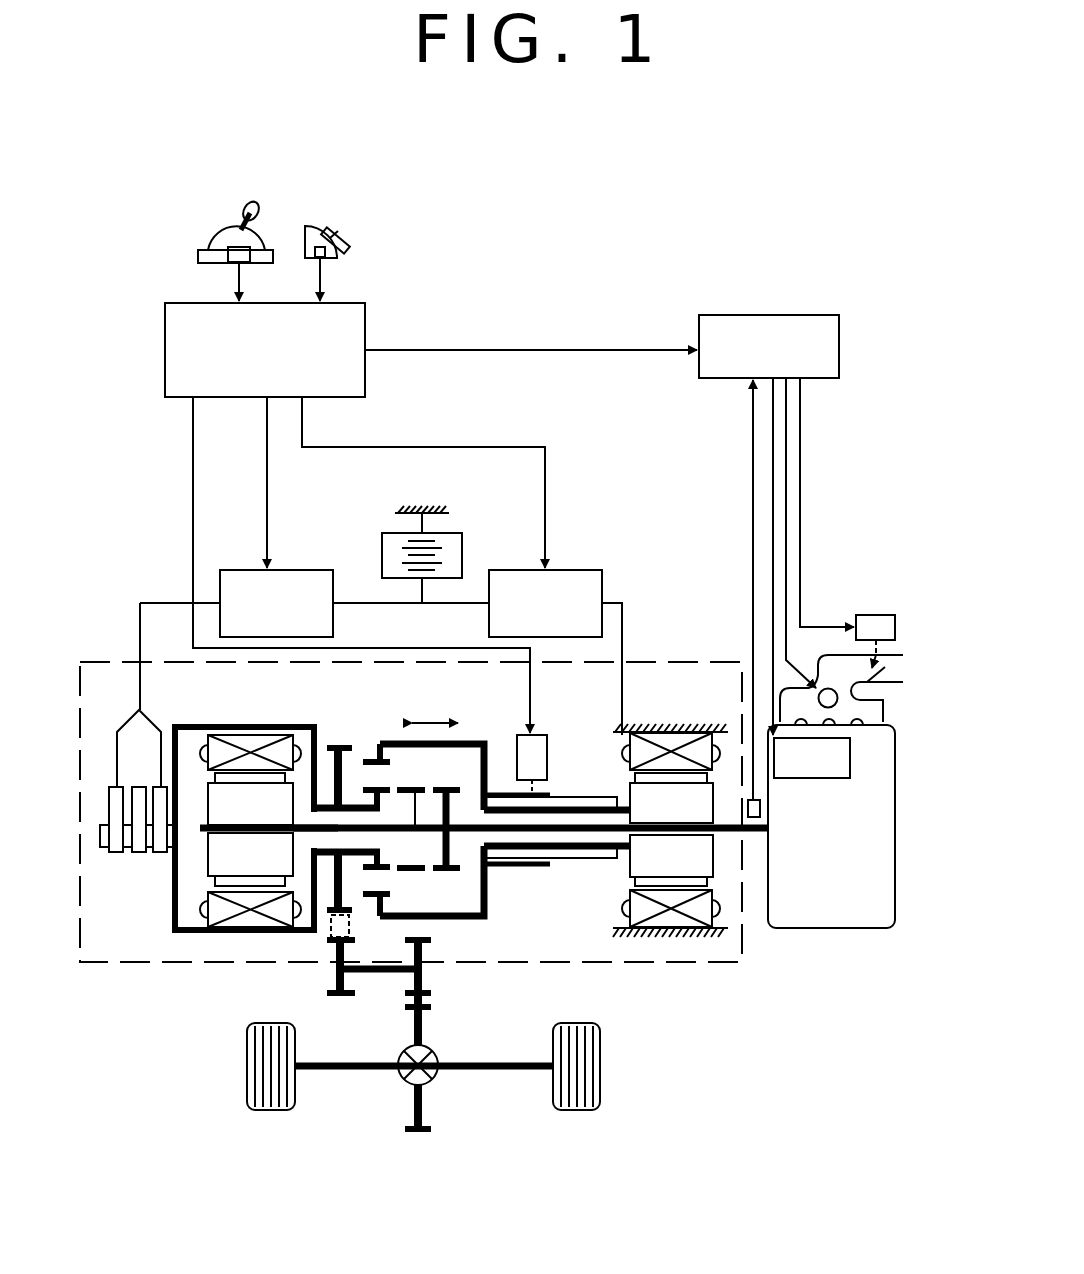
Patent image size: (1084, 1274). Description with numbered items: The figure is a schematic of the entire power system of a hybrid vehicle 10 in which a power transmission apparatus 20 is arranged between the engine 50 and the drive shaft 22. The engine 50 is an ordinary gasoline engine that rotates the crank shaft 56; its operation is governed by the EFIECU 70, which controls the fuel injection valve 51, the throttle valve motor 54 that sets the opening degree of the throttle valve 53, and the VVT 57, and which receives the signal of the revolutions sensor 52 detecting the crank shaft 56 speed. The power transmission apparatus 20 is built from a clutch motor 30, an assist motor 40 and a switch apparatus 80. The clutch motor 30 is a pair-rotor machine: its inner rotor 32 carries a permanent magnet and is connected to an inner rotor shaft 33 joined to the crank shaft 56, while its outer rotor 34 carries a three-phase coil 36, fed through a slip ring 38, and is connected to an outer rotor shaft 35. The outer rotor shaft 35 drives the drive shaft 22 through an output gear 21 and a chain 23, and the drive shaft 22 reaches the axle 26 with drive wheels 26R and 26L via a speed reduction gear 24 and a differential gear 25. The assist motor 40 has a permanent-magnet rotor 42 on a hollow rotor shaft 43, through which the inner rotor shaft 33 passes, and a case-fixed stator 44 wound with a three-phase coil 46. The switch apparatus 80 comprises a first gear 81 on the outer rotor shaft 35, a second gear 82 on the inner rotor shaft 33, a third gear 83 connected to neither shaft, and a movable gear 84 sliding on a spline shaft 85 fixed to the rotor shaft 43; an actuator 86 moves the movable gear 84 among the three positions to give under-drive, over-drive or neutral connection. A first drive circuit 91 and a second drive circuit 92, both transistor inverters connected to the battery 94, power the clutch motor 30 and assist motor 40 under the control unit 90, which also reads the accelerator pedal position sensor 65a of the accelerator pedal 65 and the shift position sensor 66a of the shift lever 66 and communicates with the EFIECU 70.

The power output apparatus 10 is at (559, 284).
The power transmission apparatus 20 is at (637, 662).
The output gear 21 is at (337, 743).
The drive shaft 22 is at (372, 974).
The chain 23 is at (331, 937).
The speed reduction gear 24 is at (431, 973).
The differential gear 25 is at (436, 1058).
The axle 26 is at (500, 1070).
The drive wheel 26L is at (262, 1023).
The drive wheel 26R is at (588, 1022).
The clutch motor 30 is at (247, 720).
The inner rotor 32 is at (213, 873).
The inner rotor shaft 33 is at (306, 836).
The outer rotor 34 is at (223, 733).
The outer rotor shaft 35 is at (183, 727).
The three-phase coil 36 is at (203, 905).
The slip ring 38 is at (103, 850).
The assist motor 40 is at (668, 686).
The rotor 42 is at (630, 865).
The hollow rotor shaft 43 is at (628, 787).
The stator 44 is at (630, 917).
The three-phase coil 46 is at (622, 747).
The engine 50 is at (862, 928).
The fuel injection valve 51 is at (828, 698).
The revolutions sensor 52 is at (761, 810).
The throttle valve 53 is at (886, 672).
The throttle valve motor 54 is at (875, 615).
The crank shaft 56 is at (760, 838).
The VVT 57 is at (805, 778).
The accelerator pedal 65 is at (314, 226).
The accelerator pedal position sensor 65a is at (325, 258).
The shift lever 66 is at (250, 208).
The shift position sensor 66a is at (228, 267).
The EFIECU 70 is at (785, 315).
The switch apparatus 80 is at (427, 708).
The first gear 81 is at (389, 796).
The second gear 82 is at (452, 794).
The third gear 83 is at (416, 832).
The movable gear 84 is at (368, 757).
The spline shaft 85 is at (520, 882).
The actuator 86 is at (516, 767).
The control unit 90 is at (366, 374).
The first drive circuit 91 is at (298, 570).
The second drive circuit 92 is at (578, 570).
The battery 94 is at (462, 546).